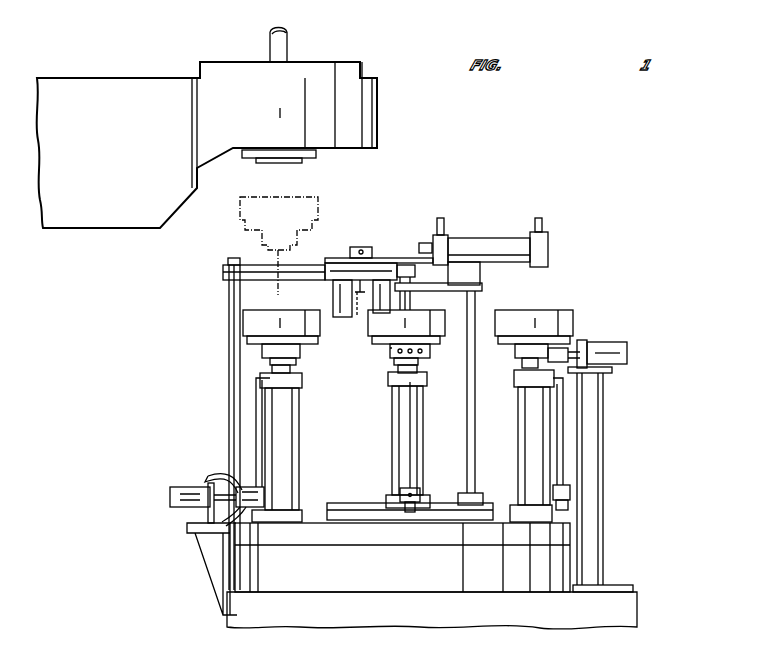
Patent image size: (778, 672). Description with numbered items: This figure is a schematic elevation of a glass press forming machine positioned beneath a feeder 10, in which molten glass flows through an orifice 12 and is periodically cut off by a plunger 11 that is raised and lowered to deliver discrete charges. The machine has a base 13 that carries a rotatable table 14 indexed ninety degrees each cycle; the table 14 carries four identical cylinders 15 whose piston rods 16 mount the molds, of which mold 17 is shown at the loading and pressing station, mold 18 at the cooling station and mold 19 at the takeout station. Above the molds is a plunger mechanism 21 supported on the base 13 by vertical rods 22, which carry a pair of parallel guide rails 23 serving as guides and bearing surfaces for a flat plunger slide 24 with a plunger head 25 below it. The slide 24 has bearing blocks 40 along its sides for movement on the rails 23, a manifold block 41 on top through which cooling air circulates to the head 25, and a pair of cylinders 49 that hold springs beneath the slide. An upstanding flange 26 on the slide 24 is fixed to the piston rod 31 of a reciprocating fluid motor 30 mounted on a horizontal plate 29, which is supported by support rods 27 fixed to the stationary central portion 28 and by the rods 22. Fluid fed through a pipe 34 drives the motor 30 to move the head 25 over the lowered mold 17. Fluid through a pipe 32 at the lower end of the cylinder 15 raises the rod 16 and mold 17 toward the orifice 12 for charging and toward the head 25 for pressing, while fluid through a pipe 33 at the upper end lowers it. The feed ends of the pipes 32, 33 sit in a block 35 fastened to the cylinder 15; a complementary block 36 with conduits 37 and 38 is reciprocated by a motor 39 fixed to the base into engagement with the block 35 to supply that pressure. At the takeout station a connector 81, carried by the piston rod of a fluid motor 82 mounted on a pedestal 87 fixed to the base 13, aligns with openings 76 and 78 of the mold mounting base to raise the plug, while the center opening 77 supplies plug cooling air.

The feeder 10 is at (400, 113).
The plunger 11 is at (287, 40).
The orifice 12 is at (300, 160).
The base 13 is at (625, 612).
The rotatable table 14 is at (562, 534).
The cylinder 15 is at (275, 402).
The piston rod 16 is at (291, 369).
The mold 17 is at (252, 322).
The mold 18 is at (438, 324).
The mold 19 is at (560, 315).
The plunger mechanism 21 is at (380, 240).
The vertical rod 22 is at (233, 372).
The guide rail 23 is at (257, 265).
The plunger slide 24 is at (340, 259).
The plunger head 25 is at (358, 316).
The upstanding flange 26 is at (421, 243).
The vertical support rod 27 is at (473, 428).
The stationary central portion 28 is at (345, 512).
The horizontal plate 29 is at (480, 287).
The reciprocating fluid motor 30 is at (489, 244).
The piston rod 31 is at (438, 235).
The pipe 32 is at (230, 526).
The pipe 33 is at (256, 446).
The pipe 34 is at (542, 222).
The block 35 is at (263, 497).
The complementary block 36 is at (230, 511).
The conduit 37 is at (208, 476).
The conduit 38 is at (190, 532).
The motor 39 is at (178, 497).
The bearing block 40 is at (338, 272).
The manifold block 41 is at (363, 247).
The cylinder 49 is at (345, 317).
The opening 76 is at (418, 362).
The center opening 77 is at (430, 349).
The opening 78 is at (390, 352).
The connector 81 is at (550, 356).
The fluid motor 82 is at (627, 354).
The pedestal 87 is at (590, 420).